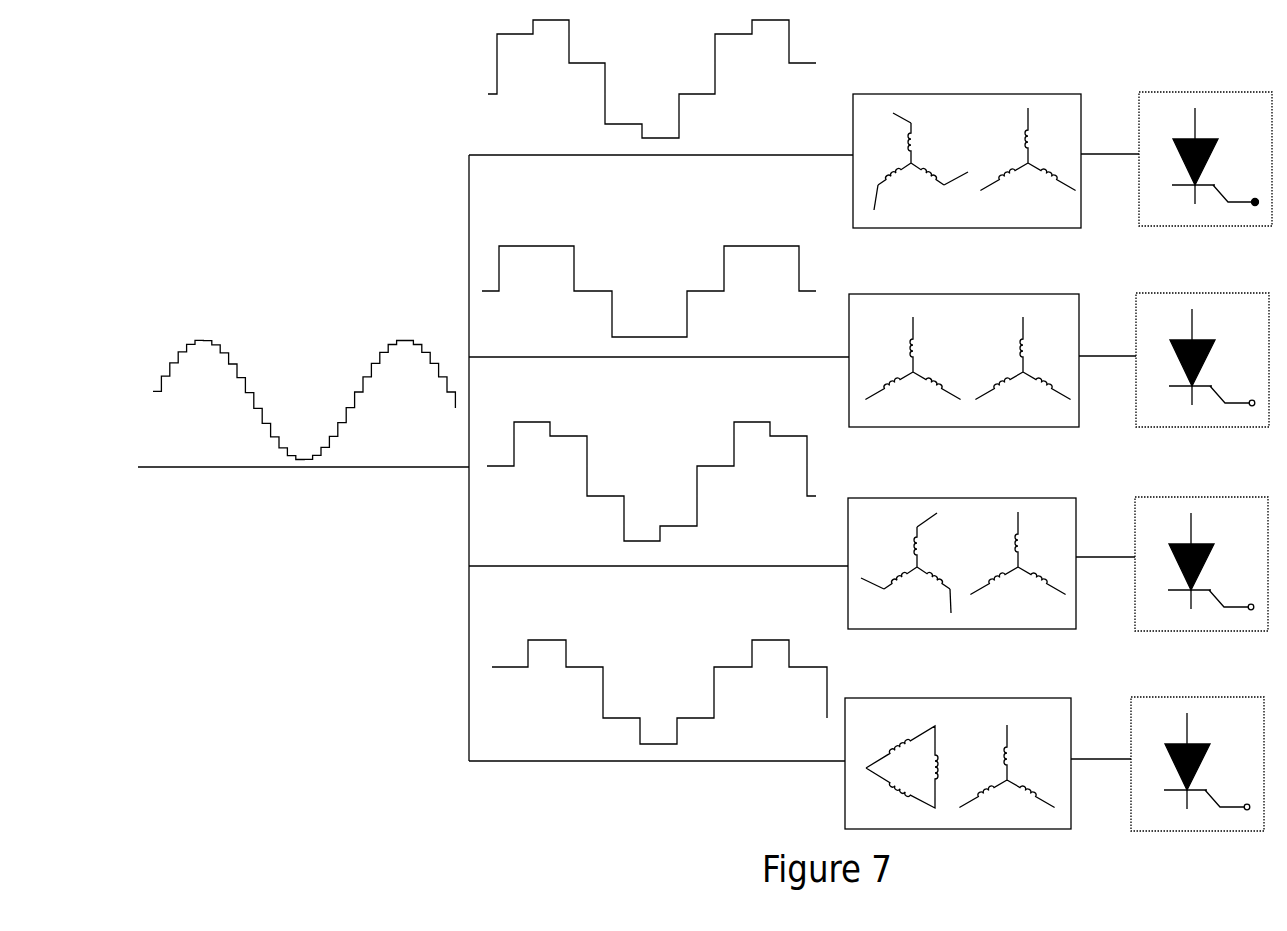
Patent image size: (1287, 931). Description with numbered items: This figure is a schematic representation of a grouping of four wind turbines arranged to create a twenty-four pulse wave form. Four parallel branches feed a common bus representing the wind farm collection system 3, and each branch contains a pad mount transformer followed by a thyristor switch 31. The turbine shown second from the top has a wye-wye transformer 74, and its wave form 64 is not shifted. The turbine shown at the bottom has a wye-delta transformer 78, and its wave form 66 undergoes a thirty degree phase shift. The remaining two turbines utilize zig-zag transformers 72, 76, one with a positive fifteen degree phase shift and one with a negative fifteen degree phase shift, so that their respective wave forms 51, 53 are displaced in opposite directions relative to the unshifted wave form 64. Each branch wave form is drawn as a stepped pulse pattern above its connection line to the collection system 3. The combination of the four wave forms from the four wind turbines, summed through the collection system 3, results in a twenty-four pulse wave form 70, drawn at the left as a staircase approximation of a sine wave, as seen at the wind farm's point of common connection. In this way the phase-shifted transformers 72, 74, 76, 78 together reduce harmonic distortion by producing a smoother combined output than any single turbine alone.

The wind farm collection system 3 is at (469, 156).
The 24 pulse wave form 70 is at (303, 403).
The wave form 51 is at (652, 79).
The wave form 64 is at (649, 293).
The wave form 53 is at (651, 481).
The wave form 66 is at (659, 692).
The zig-zag transformer 72 is at (967, 149).
The wye-wye transformer 74 is at (964, 348).
The zig-zag transformer 76 is at (962, 551).
The wye-delta transformer 78 is at (958, 751).
The thyristor switch 31 is at (1201, 448).